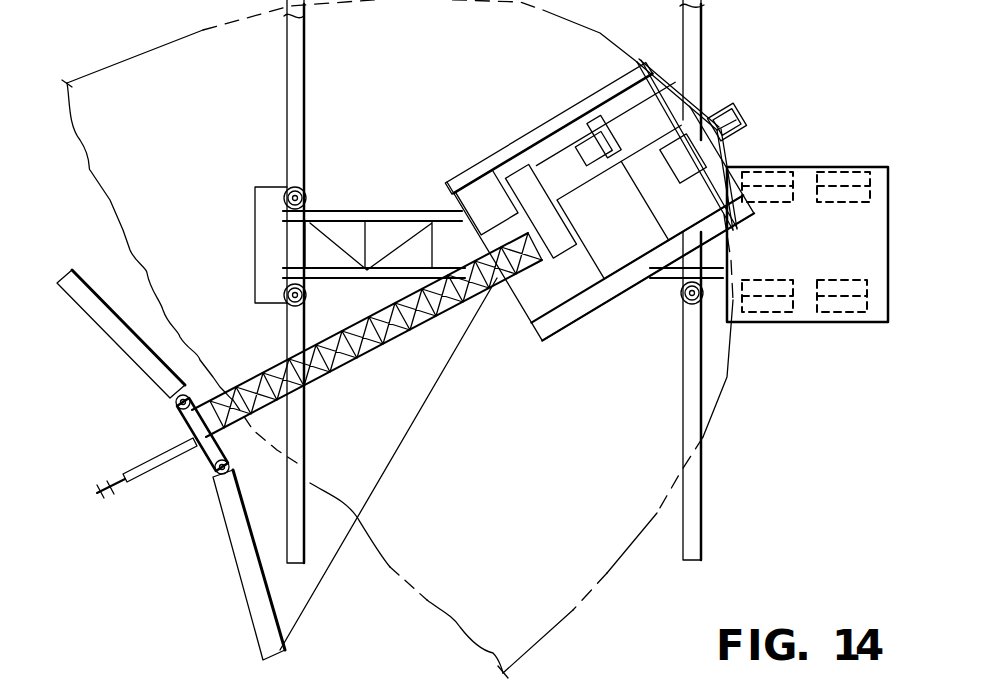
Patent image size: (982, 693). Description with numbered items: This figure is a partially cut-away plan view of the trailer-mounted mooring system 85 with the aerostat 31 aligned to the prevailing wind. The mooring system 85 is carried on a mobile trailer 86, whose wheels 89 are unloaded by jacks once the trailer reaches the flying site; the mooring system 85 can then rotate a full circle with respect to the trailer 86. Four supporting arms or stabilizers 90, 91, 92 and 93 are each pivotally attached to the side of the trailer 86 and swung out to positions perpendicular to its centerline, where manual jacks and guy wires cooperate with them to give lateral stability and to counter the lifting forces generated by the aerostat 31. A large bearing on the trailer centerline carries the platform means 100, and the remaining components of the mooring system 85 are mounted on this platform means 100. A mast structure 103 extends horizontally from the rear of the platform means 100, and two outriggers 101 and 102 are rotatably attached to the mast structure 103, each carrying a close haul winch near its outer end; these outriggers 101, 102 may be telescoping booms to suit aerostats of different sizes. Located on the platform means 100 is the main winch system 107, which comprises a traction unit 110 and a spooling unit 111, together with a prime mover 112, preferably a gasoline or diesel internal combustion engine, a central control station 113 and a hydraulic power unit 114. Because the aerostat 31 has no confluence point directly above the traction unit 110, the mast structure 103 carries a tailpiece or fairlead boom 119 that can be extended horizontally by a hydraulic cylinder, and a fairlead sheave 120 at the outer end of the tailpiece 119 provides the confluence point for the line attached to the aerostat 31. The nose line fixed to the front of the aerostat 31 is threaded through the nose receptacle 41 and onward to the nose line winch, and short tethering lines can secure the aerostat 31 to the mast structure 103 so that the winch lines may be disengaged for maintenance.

The aerostat 31 is at (613, 567).
The nose receptacle 41 is at (702, 112).
The mooring system 85 is at (452, 161).
The mobile trailer 86 is at (863, 238).
The wheels 89 is at (847, 172).
The supporting arm or stabilizer 90 is at (307, 557).
The supporting arm or stabilizer 91 is at (705, 537).
The supporting arm or stabilizer 92 is at (293, 103).
The supporting arm or stabilizer 93 is at (693, 57).
The platform means 100 is at (525, 122).
The outrigger 101 is at (125, 345).
The outrigger 102 is at (250, 587).
The mast structure 103 is at (338, 367).
The main winch system 107 is at (565, 283).
The traction unit 110 is at (527, 187).
The spooling unit 111 is at (626, 247).
The prime mover 112 is at (620, 120).
The central control station 113 is at (733, 225).
The hydraulic power unit 114 is at (480, 205).
The tailpiece or fairlead boom 119 is at (167, 448).
The fairlead sheave 120 is at (110, 493).